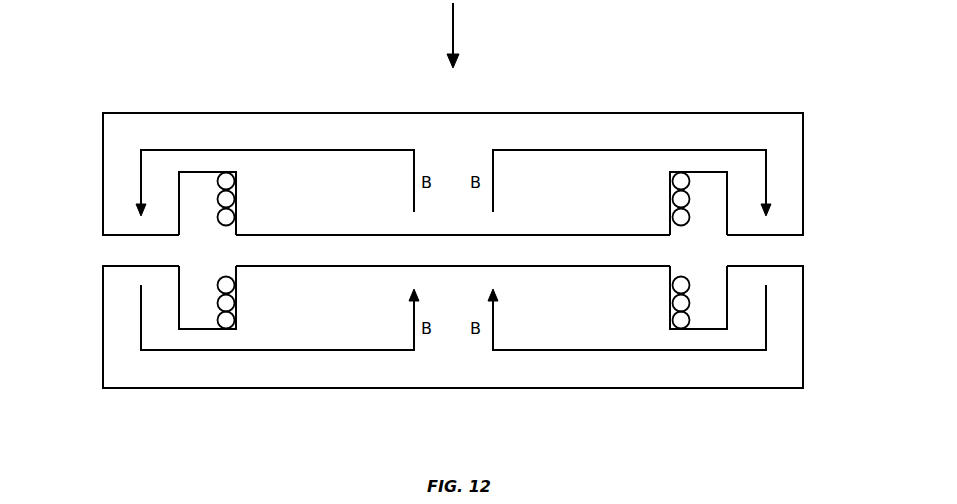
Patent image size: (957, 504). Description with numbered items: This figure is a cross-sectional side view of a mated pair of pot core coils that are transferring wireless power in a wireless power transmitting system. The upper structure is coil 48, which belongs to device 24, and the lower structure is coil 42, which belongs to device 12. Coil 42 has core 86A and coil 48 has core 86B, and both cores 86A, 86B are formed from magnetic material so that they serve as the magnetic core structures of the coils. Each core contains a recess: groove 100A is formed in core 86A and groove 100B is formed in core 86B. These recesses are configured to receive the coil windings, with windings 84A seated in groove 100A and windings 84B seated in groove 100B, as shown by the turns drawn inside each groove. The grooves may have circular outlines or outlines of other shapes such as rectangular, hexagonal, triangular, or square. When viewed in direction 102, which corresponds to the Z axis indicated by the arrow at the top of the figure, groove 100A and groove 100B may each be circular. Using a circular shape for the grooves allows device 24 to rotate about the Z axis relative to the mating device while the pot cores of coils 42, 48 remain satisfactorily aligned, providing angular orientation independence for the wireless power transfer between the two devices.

The direction 102 is at (455, 27).
The groove 100B is at (200, 193).
The windings 84B is at (235, 217).
The core 86B is at (790, 170).
The device 24 is at (890, 115).
The coil 48 is at (80, 173).
The coil 42 is at (80, 315).
The windings 84A is at (235, 320).
The core 86A is at (790, 325).
The device 12 is at (890, 268).
The groove 100A is at (200, 303).